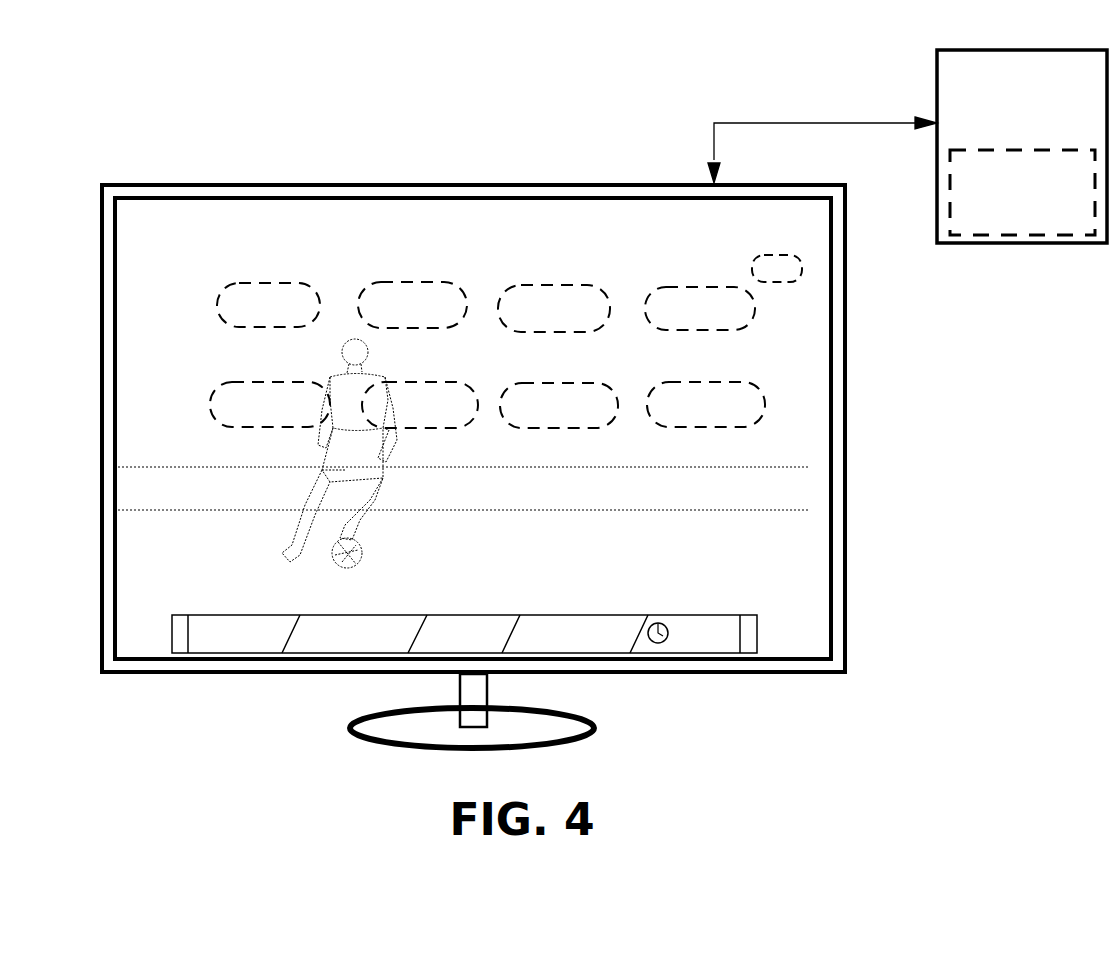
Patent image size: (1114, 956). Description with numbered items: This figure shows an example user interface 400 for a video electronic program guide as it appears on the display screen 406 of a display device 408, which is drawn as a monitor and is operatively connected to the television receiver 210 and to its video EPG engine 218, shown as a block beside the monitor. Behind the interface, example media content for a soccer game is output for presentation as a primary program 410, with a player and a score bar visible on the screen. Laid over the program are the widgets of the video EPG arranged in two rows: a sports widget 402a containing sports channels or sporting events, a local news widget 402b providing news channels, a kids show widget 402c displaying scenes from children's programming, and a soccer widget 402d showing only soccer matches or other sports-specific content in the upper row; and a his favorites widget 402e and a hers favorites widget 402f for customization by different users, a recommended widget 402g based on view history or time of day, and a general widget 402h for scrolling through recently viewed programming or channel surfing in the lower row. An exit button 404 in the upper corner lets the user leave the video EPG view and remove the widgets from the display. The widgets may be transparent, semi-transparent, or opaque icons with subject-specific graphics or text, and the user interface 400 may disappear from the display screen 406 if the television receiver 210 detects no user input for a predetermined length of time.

The user interface 400 is at (180, 297).
The sports widget 402a is at (283, 283).
The local news widget 402b is at (422, 282).
The kids show widget 402c is at (568, 285).
The soccer widget 402d is at (710, 287).
The his favorites widget 402e is at (287, 382).
The hers favorites widget 402f is at (432, 382).
The recommended widget 402g is at (567, 383).
The general widget 402h is at (714, 382).
The exit button 404 is at (793, 255).
The display screen 406 is at (848, 585).
The display device 408 is at (787, 183).
The primary program 410 is at (464, 431).
The television receiver 210 is at (1022, 146).
The video EPG engine 218 is at (1022, 192).